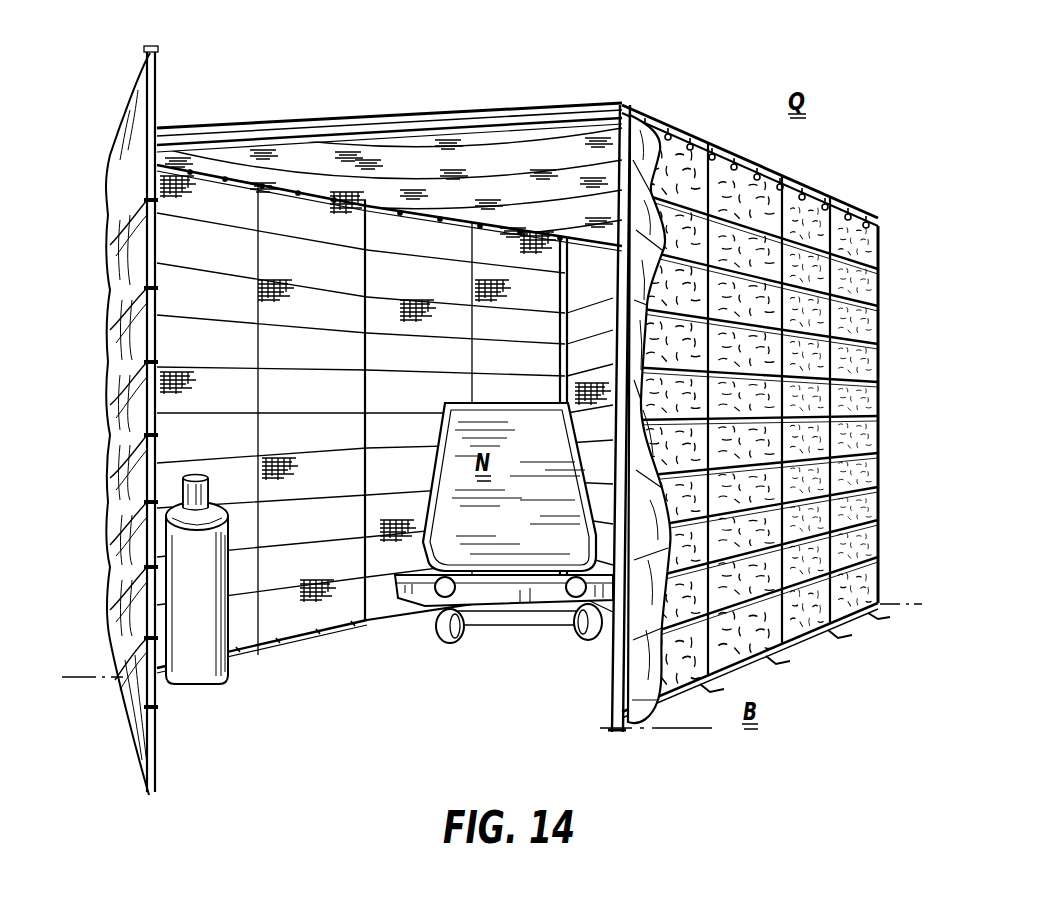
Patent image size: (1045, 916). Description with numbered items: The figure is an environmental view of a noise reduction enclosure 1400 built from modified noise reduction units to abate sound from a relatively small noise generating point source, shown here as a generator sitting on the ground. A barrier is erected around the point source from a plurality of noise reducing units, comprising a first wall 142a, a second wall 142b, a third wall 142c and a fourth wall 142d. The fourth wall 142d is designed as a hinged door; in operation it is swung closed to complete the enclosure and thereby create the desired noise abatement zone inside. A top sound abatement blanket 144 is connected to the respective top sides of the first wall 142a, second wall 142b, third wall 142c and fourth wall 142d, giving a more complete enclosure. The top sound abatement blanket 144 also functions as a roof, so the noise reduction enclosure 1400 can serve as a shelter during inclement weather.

The noise reduction enclosure 1400 is at (366, 100).
The top sound abatement blanket 144 is at (437, 137).
The first wall 142a is at (798, 577).
The second wall 142b is at (578, 300).
The third wall 142c is at (302, 578).
The fourth wall 142d is at (125, 493).